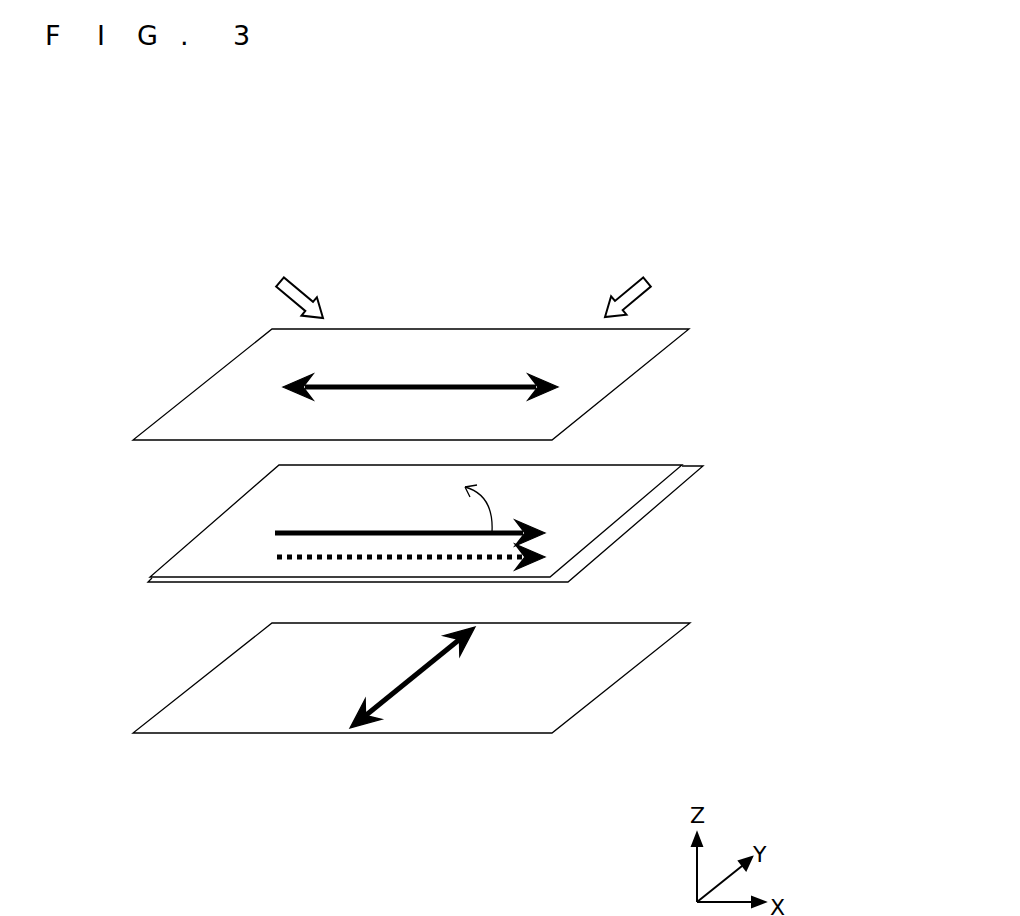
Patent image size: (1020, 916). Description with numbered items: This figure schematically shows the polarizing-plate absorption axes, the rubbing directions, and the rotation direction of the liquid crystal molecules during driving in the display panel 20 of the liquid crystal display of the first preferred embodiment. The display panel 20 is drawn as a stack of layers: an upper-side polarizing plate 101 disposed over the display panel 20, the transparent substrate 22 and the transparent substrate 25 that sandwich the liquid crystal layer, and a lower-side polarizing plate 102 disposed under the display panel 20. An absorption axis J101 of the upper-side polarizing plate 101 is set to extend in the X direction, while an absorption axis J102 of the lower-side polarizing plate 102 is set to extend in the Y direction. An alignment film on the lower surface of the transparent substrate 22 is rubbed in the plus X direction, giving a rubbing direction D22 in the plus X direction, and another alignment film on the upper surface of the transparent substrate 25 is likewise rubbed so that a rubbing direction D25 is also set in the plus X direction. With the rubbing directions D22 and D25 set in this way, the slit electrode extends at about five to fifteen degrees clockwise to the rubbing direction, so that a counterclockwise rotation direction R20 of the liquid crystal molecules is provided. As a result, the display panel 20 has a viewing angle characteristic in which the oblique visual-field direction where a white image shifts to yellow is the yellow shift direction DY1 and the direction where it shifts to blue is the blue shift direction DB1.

The display panel 20 is at (587, 245).
The upper-side polarizing plate 101 is at (622, 387).
The lower-side polarizing plate 102 is at (618, 678).
The transparent substrate 22 is at (667, 465).
The transparent substrate 25 is at (672, 498).
The absorption axis J101 is at (421, 384).
The absorption axis J102 is at (412, 682).
The rubbing direction D22 is at (367, 531).
The rubbing direction D25 is at (378, 560).
The rotation direction R20 is at (486, 502).
The yellow shift direction DY1 is at (275, 297).
The blue shift direction DB1 is at (640, 300).